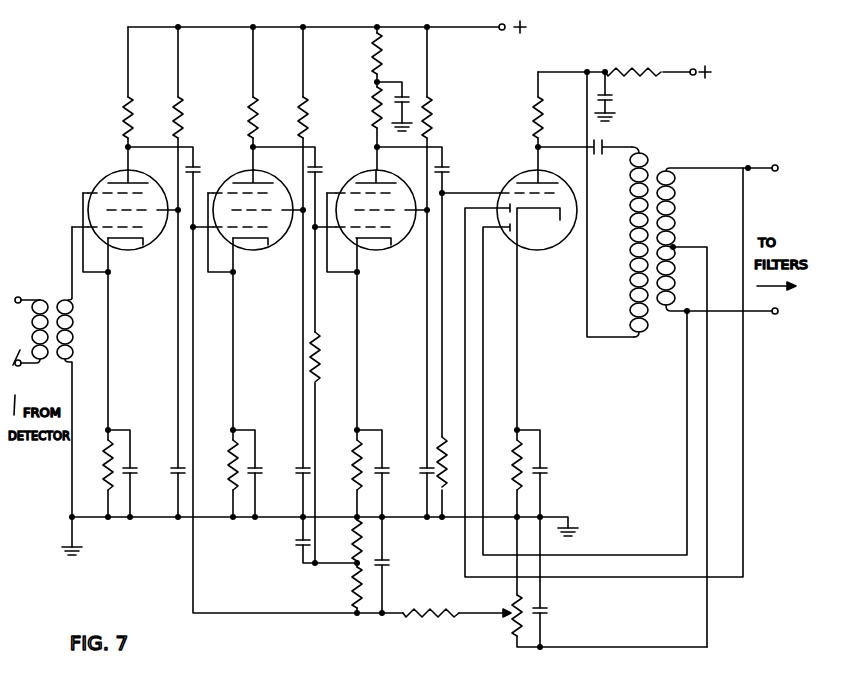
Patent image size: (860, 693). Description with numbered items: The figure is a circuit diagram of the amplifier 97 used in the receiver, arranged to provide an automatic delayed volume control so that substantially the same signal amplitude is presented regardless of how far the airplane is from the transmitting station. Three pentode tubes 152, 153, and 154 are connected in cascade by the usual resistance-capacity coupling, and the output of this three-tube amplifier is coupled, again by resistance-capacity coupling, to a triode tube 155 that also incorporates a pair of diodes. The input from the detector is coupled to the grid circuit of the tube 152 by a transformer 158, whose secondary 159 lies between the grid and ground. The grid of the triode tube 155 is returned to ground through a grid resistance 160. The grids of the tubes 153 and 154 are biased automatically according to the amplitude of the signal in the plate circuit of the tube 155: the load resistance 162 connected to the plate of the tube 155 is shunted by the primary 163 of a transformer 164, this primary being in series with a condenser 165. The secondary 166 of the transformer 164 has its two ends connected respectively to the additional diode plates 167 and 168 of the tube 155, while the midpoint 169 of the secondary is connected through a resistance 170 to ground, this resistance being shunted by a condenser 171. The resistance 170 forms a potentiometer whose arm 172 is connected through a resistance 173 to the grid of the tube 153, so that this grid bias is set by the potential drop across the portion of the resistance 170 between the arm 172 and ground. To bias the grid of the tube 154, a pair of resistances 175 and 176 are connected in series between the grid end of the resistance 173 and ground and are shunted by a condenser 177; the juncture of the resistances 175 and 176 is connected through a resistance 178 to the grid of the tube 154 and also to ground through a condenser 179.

The amplifier 97 is at (328, 48).
The pentode tube 152 is at (123, 171).
The pentode tube 153 is at (252, 171).
The pentode tube 154 is at (372, 171).
The triode tube 155 is at (531, 172).
The transformer 158 is at (52, 300).
The secondary 159 is at (63, 362).
The grid resistance 160 is at (432, 462).
The load resistance 162 is at (538, 100).
The primary 163 is at (686, 390).
The transformer 164 is at (647, 175).
The condenser 165 is at (605, 145).
The secondary 166 is at (675, 200).
The diode plate 167 is at (510, 202).
The diode plate 168 is at (506, 232).
The midpoint 169 is at (693, 437).
The resistance 170 is at (512, 624).
The condenser 171 is at (548, 608).
The arm 172 is at (510, 610).
The resistance 173 is at (433, 614).
The resistance 175 is at (355, 590).
The resistance 176 is at (360, 543).
The condenser 177 is at (387, 562).
The resistance 178 is at (317, 360).
The condenser 179 is at (297, 541).